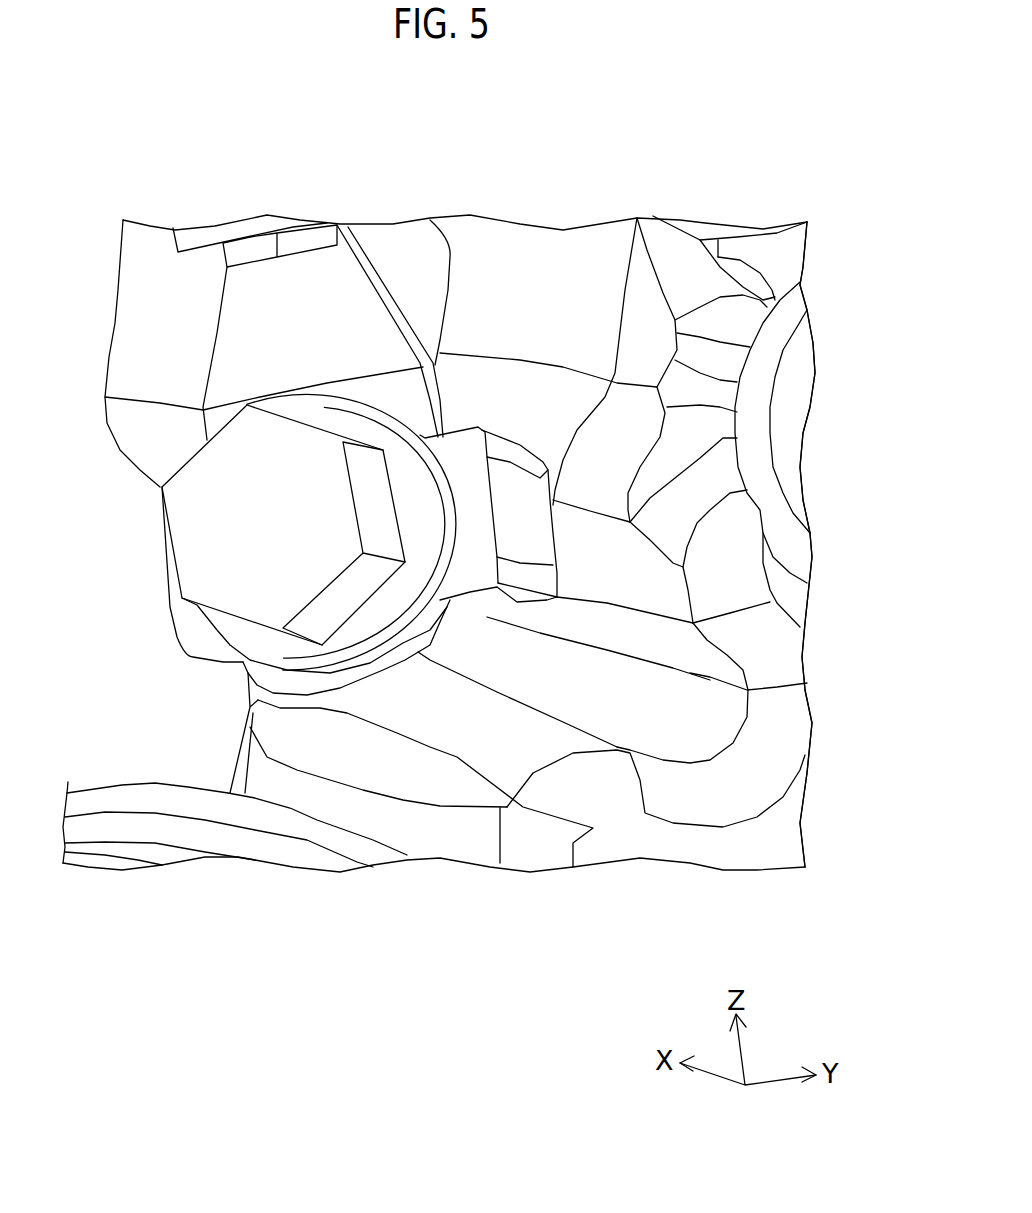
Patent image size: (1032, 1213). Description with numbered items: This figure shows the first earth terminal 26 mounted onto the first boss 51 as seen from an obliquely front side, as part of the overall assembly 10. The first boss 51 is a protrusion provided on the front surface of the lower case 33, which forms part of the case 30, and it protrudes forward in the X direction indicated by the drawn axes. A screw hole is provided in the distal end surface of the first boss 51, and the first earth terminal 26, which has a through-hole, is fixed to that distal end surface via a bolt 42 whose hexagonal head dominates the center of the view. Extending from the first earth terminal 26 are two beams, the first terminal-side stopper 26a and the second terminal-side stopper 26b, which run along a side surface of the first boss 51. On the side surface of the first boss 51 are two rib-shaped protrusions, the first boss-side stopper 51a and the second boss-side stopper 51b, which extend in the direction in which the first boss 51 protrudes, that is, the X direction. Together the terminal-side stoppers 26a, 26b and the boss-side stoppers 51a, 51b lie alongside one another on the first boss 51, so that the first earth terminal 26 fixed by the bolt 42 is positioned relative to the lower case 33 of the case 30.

The vehicle body structure 10 is at (123, 158).
The first earth terminal 26 is at (237, 337).
The first terminal-side stopper 26a is at (512, 462).
The second terminal-side stopper 26b is at (213, 657).
The bolt 42 is at (208, 552).
The first boss 51 is at (460, 727).
The first boss-side stopper 51a is at (573, 677).
The second boss-side stopper 51b is at (320, 758).
The lower case 33 is at (787, 837).
The case 30 is at (807, 544).